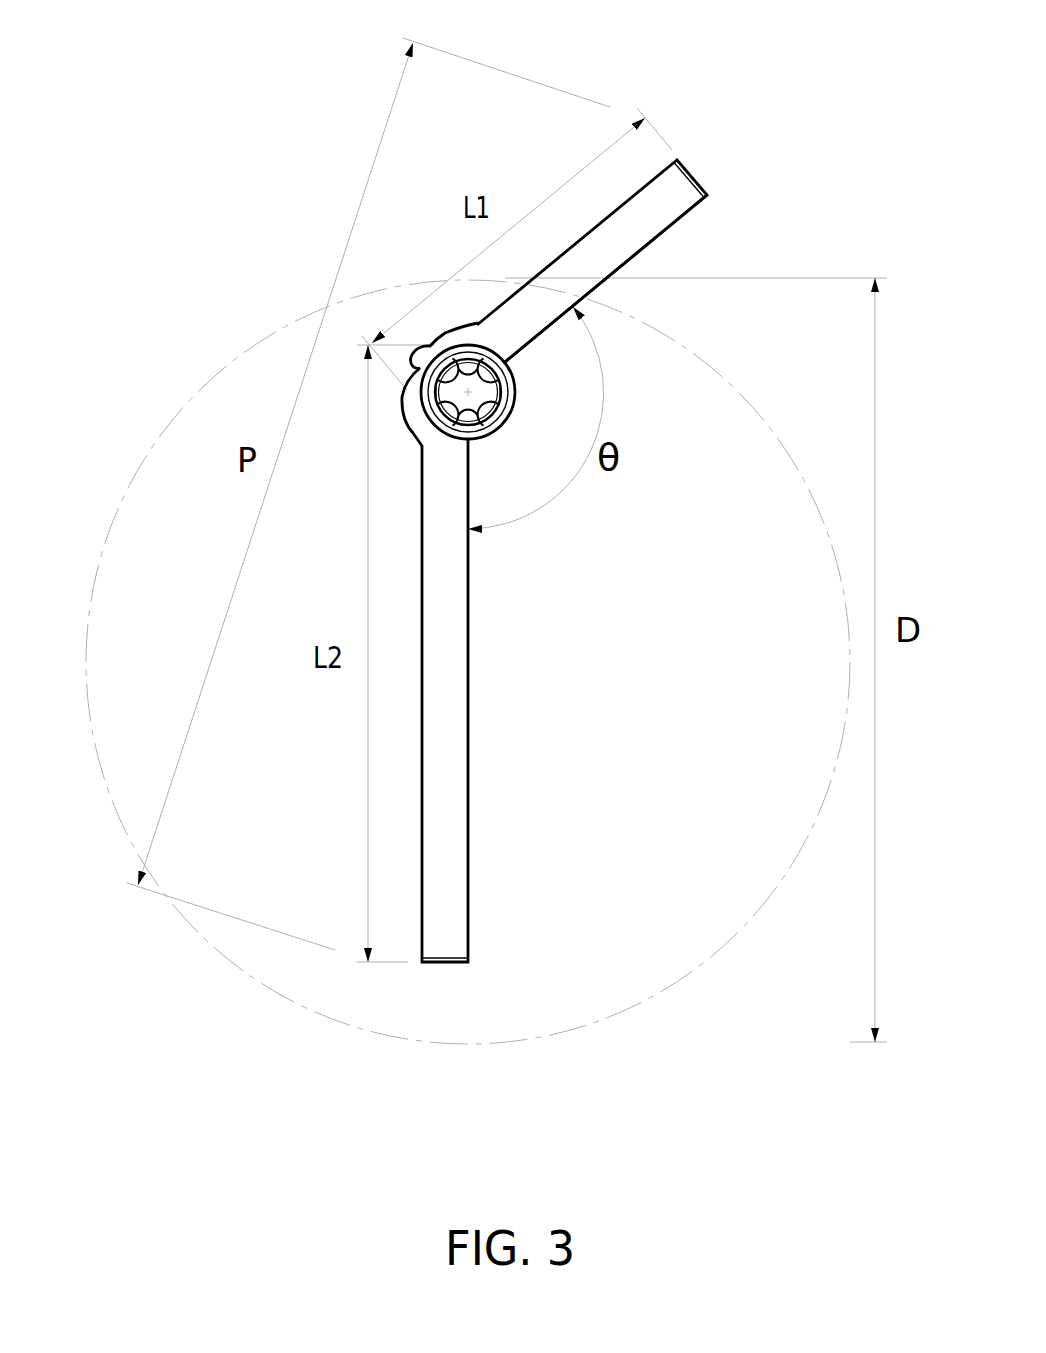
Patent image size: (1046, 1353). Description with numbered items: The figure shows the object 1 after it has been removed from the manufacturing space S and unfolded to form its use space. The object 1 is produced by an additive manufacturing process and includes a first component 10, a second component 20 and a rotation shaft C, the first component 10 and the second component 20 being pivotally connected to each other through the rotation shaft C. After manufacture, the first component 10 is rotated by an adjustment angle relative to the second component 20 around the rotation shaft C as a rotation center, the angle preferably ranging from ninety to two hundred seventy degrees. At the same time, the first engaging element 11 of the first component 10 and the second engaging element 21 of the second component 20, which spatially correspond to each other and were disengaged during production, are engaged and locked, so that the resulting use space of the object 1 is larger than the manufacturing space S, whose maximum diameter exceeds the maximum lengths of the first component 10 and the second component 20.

The object 1 is at (167, 73).
The first component 10 is at (673, 202).
The first engaging element 11 is at (576, 313).
The second component 20 is at (450, 912).
The second engaging element 21 is at (455, 414).
The rotation shaft C is at (470, 394).
The manufacturing space S is at (173, 417).